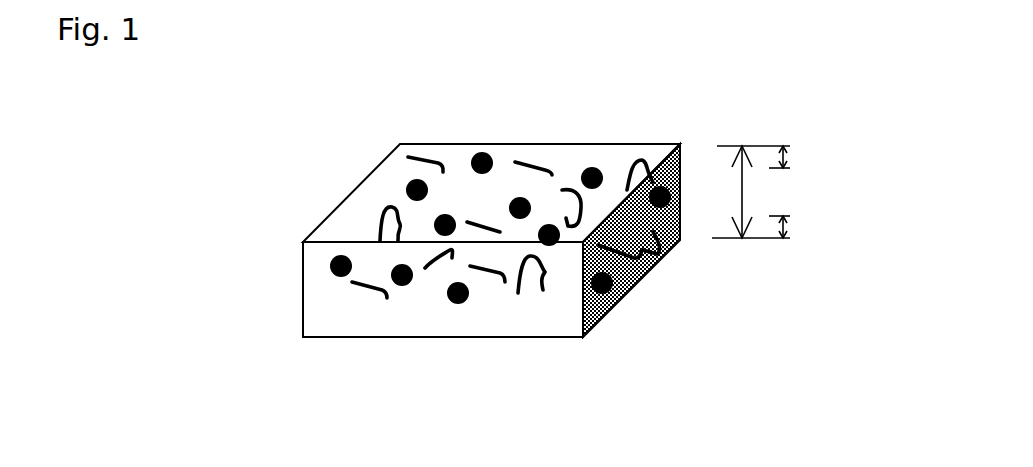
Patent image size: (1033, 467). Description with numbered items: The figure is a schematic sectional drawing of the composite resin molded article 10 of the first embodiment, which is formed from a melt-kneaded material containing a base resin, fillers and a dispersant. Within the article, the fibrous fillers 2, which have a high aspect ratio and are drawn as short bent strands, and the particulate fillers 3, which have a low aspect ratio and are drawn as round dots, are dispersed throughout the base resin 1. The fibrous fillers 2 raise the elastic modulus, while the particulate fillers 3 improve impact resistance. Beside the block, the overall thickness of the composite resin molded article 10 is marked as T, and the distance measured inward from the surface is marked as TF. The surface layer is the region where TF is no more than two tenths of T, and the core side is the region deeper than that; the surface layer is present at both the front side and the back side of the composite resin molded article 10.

The composite resin molded article 10 is at (453, 103).
The base resin 1 is at (557, 322).
The fibrous filler 2 is at (368, 287).
The particulate filler 3 is at (608, 290).
The thickness of the composite resin molded article T is at (751, 192).
The distance from the surface of the composite resin molded article TF is at (803, 191).